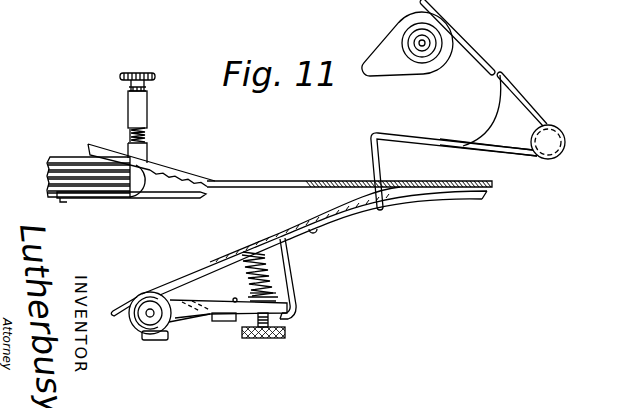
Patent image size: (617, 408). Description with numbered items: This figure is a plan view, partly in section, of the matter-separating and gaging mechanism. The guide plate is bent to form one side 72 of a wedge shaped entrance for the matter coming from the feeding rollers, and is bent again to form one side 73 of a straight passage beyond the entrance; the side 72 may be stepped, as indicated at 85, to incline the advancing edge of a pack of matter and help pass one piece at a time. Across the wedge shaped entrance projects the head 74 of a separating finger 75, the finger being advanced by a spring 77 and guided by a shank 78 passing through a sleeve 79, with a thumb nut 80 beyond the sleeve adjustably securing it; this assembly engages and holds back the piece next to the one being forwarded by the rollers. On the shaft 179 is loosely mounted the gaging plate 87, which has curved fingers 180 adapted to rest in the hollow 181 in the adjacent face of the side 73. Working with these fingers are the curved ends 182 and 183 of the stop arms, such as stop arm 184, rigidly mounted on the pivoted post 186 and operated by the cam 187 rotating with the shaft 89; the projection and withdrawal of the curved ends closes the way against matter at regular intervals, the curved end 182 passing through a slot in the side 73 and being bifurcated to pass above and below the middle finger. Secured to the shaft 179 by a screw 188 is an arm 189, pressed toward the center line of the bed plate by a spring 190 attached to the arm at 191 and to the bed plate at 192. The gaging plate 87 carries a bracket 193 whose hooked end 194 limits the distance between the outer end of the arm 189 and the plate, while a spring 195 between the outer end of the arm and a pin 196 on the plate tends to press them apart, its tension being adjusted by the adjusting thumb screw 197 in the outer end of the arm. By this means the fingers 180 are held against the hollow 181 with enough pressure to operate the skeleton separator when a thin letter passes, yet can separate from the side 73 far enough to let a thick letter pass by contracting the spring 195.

The side of wedge shaped entrance 72 is at (196, 175).
The side of straight passage 73 is at (261, 180).
The head 74 is at (137, 190).
The separating finger 75 is at (147, 151).
The spring 77 is at (146, 134).
The shank 78 is at (131, 134).
The sleeve 79 is at (148, 108).
The thumb nut 80 is at (155, 77).
The stepping 85 is at (204, 192).
The gaging plate 87 is at (209, 265).
The shaft 89 is at (423, 48).
The shaft 179 is at (150, 309).
The curved fingers 180 is at (399, 198).
The hollow 181 is at (388, 160).
The curved end 182 is at (370, 154).
The curved end 183 is at (425, 37).
The stop arm 184 is at (519, 160).
The pivoted post 186 is at (562, 133).
The cam 187 is at (407, 44).
The screw 188 is at (152, 340).
The arm 189 is at (188, 318).
The spring 190 is at (218, 312).
The attachment point on arm 191 is at (230, 321).
The attachment point on bed plate 192 is at (114, 314).
The bracket 193 is at (300, 285).
The hooked end 194 is at (300, 316).
The spring 195 is at (272, 290).
The pin 196 is at (253, 252).
The adjusting thumb screw 197 is at (260, 338).